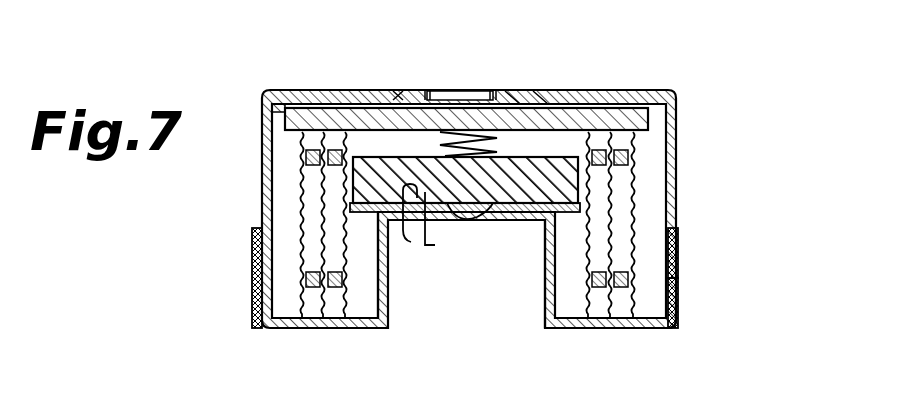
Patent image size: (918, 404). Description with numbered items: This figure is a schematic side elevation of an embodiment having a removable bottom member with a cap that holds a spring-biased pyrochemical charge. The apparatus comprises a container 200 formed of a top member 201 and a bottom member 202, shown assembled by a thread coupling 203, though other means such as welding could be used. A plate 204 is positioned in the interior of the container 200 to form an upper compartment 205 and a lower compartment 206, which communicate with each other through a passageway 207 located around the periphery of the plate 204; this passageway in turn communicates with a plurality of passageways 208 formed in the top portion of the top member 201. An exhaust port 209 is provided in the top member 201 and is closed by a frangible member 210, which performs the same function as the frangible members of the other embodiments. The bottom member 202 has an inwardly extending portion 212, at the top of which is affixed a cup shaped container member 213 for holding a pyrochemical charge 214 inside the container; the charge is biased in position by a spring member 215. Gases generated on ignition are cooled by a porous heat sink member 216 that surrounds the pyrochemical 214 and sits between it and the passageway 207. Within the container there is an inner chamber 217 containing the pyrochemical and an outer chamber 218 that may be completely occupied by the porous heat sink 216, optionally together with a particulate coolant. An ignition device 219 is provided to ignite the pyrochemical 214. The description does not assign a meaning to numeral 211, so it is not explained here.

The container 200 is at (697, 173).
The top member 201 is at (670, 100).
The bottom member 202 is at (677, 315).
The thread coupling 203 is at (677, 248).
The plate 204 is at (633, 120).
The upper compartment 205 is at (527, 100).
The lower compartment 206 is at (660, 332).
The passageway 207 is at (655, 120).
The passageways 208 is at (608, 107).
The exhaust port 209 is at (505, 97).
The frangible member 210 is at (432, 97).
The right bellows 211 is at (611, 225).
The inwardly extending portion 212 is at (540, 300).
The cup shaped container member 213 is at (570, 210).
The pyrochemical charge 214 is at (460, 218).
The spring member 215 is at (490, 150).
The porous heat sink member 216 is at (307, 330).
The inner chamber 217 is at (365, 290).
The outer chamber 218 is at (313, 257).
The ignition device 219 is at (429, 252).